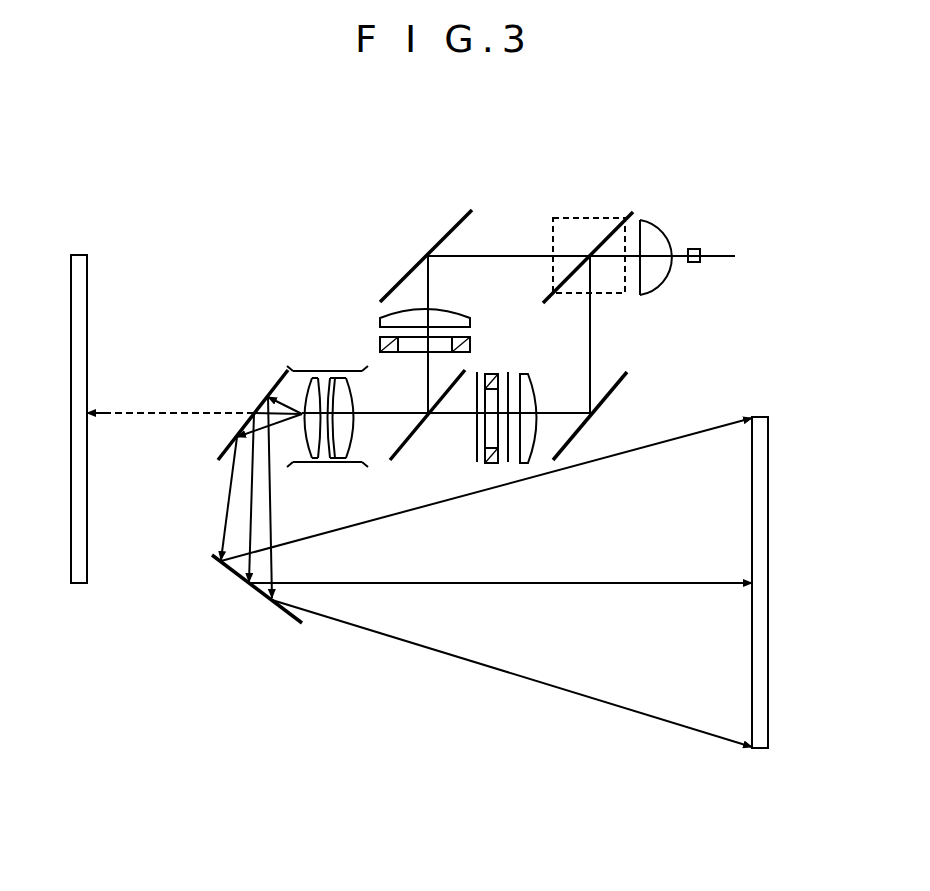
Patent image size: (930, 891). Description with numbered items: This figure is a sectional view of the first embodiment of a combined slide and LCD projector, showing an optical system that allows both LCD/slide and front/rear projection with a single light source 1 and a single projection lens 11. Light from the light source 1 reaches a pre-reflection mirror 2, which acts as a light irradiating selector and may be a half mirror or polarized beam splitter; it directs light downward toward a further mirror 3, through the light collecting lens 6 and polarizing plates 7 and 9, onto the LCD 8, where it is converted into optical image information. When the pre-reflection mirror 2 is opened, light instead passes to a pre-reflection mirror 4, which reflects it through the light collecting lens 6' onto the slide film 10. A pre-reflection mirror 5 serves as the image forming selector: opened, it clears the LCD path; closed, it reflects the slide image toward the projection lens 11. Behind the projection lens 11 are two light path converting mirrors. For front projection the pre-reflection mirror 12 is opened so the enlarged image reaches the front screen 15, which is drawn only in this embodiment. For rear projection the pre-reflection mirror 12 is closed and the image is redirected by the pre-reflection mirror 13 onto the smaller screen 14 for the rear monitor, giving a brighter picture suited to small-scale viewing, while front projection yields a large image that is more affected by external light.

The light source 1 is at (662, 240).
The pre-reflection mirror 2 is at (584, 235).
The mirror 3 is at (598, 405).
The pre-reflection mirror 4 is at (443, 240).
The pre-reflection mirror 5 is at (405, 445).
The light collecting lens 6 is at (543, 418).
The light collecting lens 6' is at (425, 299).
The polarizing plate 7 is at (510, 372).
The LCD 8 is at (492, 372).
The polarizing plate 9 is at (477, 434).
The slide film 10 is at (383, 345).
The projection lens 11 is at (323, 462).
The pre-reflection mirror 12 is at (272, 386).
The pre-reflection mirror 13 is at (255, 596).
The front screen for rear monitor 14 is at (762, 547).
The front screen 15 is at (86, 265).